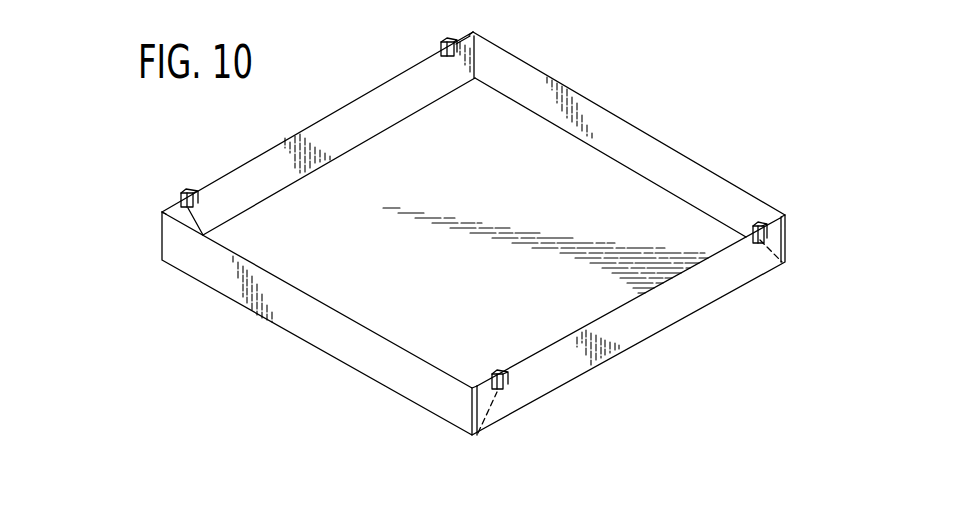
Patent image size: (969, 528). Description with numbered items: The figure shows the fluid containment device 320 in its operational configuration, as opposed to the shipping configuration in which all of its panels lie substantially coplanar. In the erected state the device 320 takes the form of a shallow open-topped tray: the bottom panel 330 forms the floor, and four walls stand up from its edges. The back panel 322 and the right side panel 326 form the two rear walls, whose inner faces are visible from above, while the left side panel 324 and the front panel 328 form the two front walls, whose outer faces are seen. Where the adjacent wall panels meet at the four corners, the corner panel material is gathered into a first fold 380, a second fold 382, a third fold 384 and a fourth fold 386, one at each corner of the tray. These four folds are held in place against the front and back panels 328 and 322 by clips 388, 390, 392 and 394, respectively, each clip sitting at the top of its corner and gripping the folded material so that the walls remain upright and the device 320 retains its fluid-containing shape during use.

The fluid containment device 320 is at (447, 226).
The back panel 322 is at (332, 127).
The left side panel 324 is at (312, 327).
The right side panel 326 is at (578, 101).
The front panel 328 is at (682, 313).
The bottom panel 330 is at (575, 153).
The first fold 380 is at (474, 377).
The second fold 382 is at (752, 207).
The third fold 384 is at (440, 71).
The fourth fold 386 is at (212, 222).
The clip 388 is at (503, 388).
The clip 390 is at (765, 232).
The clip 392 is at (442, 40).
The clip 394 is at (178, 193).